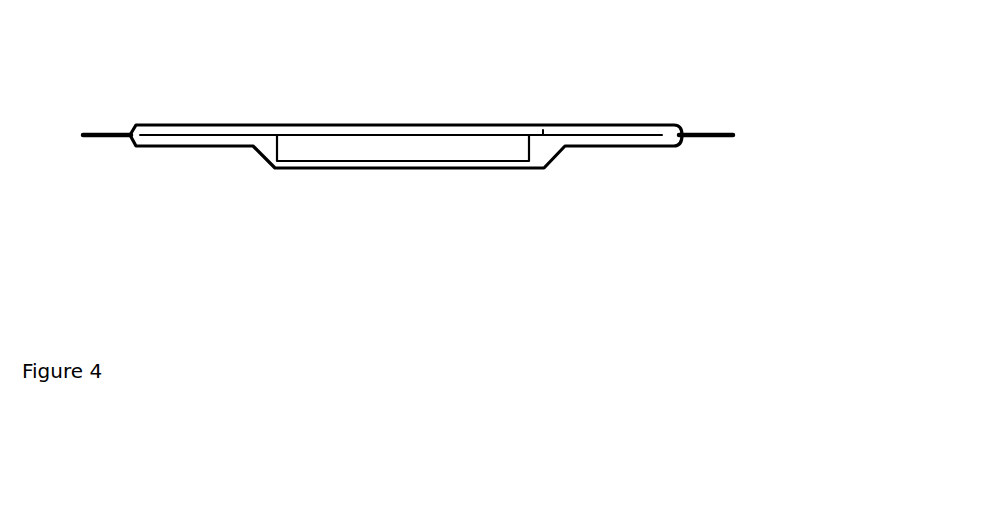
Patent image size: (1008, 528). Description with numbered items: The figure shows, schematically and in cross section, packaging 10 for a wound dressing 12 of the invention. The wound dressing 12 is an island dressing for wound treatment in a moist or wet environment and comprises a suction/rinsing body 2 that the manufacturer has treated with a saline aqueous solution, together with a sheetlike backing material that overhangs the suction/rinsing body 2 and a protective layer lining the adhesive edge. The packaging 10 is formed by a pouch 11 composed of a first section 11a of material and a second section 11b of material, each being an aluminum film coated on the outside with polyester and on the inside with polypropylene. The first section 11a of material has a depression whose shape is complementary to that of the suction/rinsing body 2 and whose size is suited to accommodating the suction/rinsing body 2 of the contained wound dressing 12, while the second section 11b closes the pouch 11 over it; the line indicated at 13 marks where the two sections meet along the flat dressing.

The packaging 10 is at (436, 145).
The pouch 11 is at (406, 146).
The first section of material 11a is at (205, 148).
The second section of material 11b is at (210, 124).
The wound dressing 12 is at (543, 133).
The separation line / joint 13 is at (265, 127).
The suction/rinsing body 2 is at (442, 148).